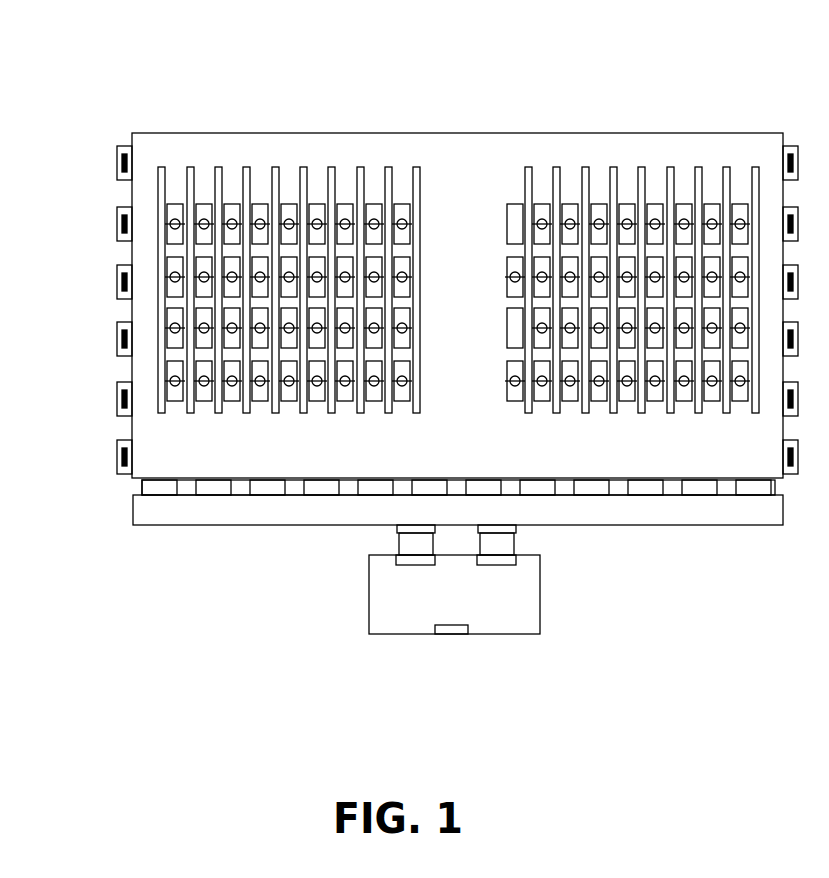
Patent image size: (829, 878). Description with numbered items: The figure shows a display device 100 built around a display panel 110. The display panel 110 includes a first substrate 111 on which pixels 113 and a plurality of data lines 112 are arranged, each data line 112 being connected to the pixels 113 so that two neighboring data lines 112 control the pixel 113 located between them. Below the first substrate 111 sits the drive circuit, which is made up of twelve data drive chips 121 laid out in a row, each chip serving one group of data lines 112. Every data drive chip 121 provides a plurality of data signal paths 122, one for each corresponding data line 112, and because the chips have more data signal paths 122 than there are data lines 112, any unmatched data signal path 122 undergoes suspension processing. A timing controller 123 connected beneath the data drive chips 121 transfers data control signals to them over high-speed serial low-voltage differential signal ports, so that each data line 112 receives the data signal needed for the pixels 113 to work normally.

The display device 100 is at (252, 132).
The display panel 110 is at (386, 160).
The first substrate 111 is at (443, 190).
The data lines 112 is at (556, 173).
The pixels 113 is at (683, 213).
The data drive chips 121 is at (140, 484).
The data signal paths 122 is at (728, 513).
The timing controller 123 is at (410, 590).